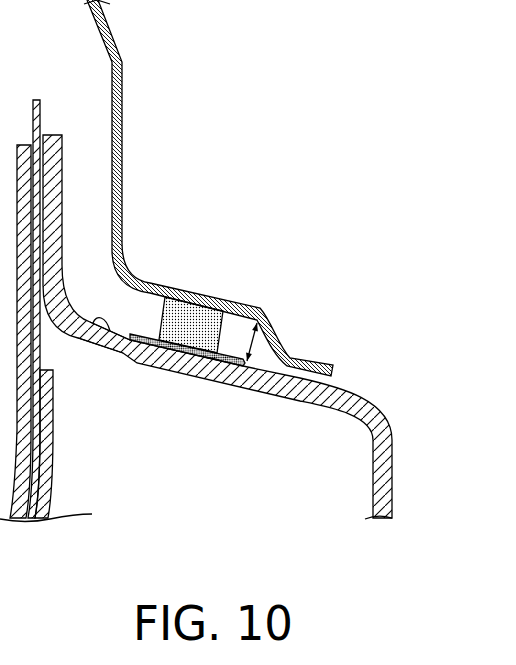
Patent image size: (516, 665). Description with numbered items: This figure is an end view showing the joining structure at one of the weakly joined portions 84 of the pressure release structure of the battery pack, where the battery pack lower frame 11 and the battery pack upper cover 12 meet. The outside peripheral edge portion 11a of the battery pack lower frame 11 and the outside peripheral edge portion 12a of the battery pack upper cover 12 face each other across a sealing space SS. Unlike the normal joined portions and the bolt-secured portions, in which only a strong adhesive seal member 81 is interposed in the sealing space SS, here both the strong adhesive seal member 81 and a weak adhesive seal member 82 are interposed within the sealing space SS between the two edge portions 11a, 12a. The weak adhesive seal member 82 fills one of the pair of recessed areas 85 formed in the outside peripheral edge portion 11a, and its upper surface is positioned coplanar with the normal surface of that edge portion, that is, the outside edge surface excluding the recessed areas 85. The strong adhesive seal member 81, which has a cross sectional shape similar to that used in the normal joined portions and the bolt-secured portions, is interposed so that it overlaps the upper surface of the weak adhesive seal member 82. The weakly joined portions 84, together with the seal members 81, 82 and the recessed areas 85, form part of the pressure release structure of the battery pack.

The battery pack lower frame 11 is at (262, 327).
The outside peripheral edge portion of the battery pack lower frame 11a is at (90, 342).
The battery pack upper cover 12 is at (208, 188).
The outside peripheral edge portion of the battery pack upper cover 12a is at (232, 302).
The strong adhesive seal member 81 is at (162, 320).
The weak adhesive seal member 82 is at (170, 350).
The weakly joined portion 84 is at (230, 345).
The recessed area 85 is at (212, 356).
The sealing space SS is at (252, 340).